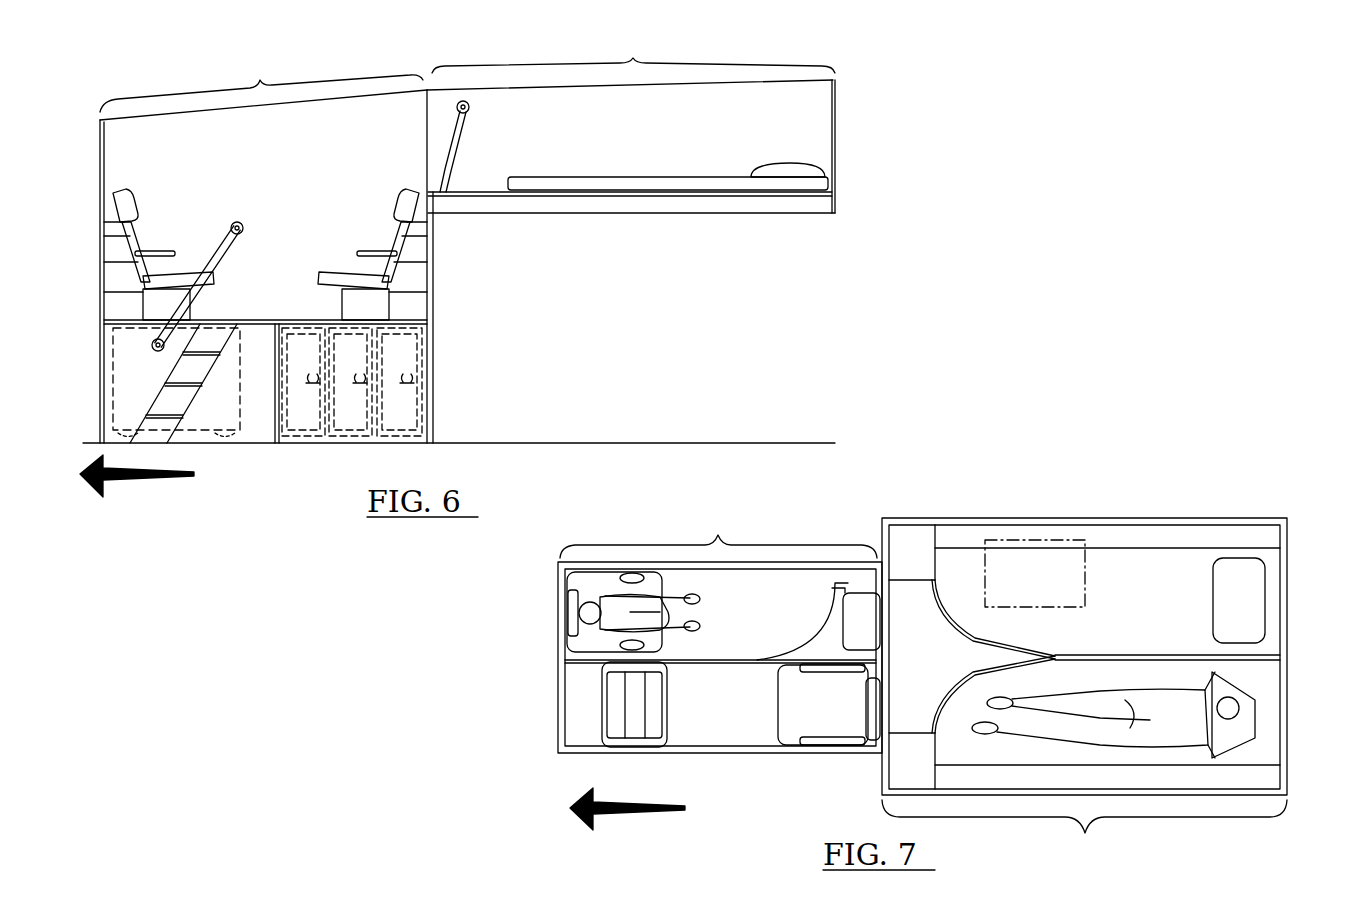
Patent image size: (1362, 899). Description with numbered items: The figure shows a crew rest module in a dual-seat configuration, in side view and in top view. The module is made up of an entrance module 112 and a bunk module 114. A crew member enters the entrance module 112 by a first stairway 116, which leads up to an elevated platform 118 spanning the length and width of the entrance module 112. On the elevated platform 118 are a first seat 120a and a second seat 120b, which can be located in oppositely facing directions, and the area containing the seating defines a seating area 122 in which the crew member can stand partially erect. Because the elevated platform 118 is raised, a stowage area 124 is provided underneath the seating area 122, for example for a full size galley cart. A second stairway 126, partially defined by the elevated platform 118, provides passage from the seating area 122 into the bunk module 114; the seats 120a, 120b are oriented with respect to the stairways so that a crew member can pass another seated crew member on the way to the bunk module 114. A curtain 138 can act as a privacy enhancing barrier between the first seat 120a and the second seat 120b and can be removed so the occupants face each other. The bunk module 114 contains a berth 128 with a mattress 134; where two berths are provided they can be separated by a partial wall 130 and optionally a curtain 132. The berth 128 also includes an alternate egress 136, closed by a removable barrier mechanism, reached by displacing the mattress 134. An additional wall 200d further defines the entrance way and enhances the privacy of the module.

In FIG. 6, the entrance module 112 is at (266, 248).
In FIG. 7, the entrance module 112 is at (720, 629).
In FIG. 6, the bunk module 114 is at (631, 127).
In FIG. 7, the bunk module 114 is at (1084, 691).
In FIG. 6, the first stairway 116 is at (150, 405).
In FIG. 7, the first stairway 116 is at (630, 720).
In FIG. 6, the elevated platform 118 is at (405, 320).
In FIG. 7, the elevated platform 118 is at (747, 710).
In FIG. 6, the first seat 120a is at (125, 256).
In FIG. 7, the first seat 120a is at (568, 622).
In FIG. 6, the second seat 120b is at (405, 247).
In FIG. 7, the second seat 120b is at (822, 715).
In FIG. 6, the seating area 122 is at (140, 160).
In FIG. 6, the stowage area 124 is at (262, 432).
In FIG. 7, the second stairway 126 is at (862, 605).
In FIG. 6, the berth 128 is at (810, 122).
In FIG. 7, the partial wall 130 is at (1225, 648).
In FIG. 7, the curtain 132 is at (943, 607).
In FIG. 6, the mattress 134 is at (625, 183).
In FIG. 7, the alternate egress 136 is at (1043, 562).
In FIG. 7, the curtain 138 is at (720, 667).
In FIG. 6, the wall 200d is at (433, 392).